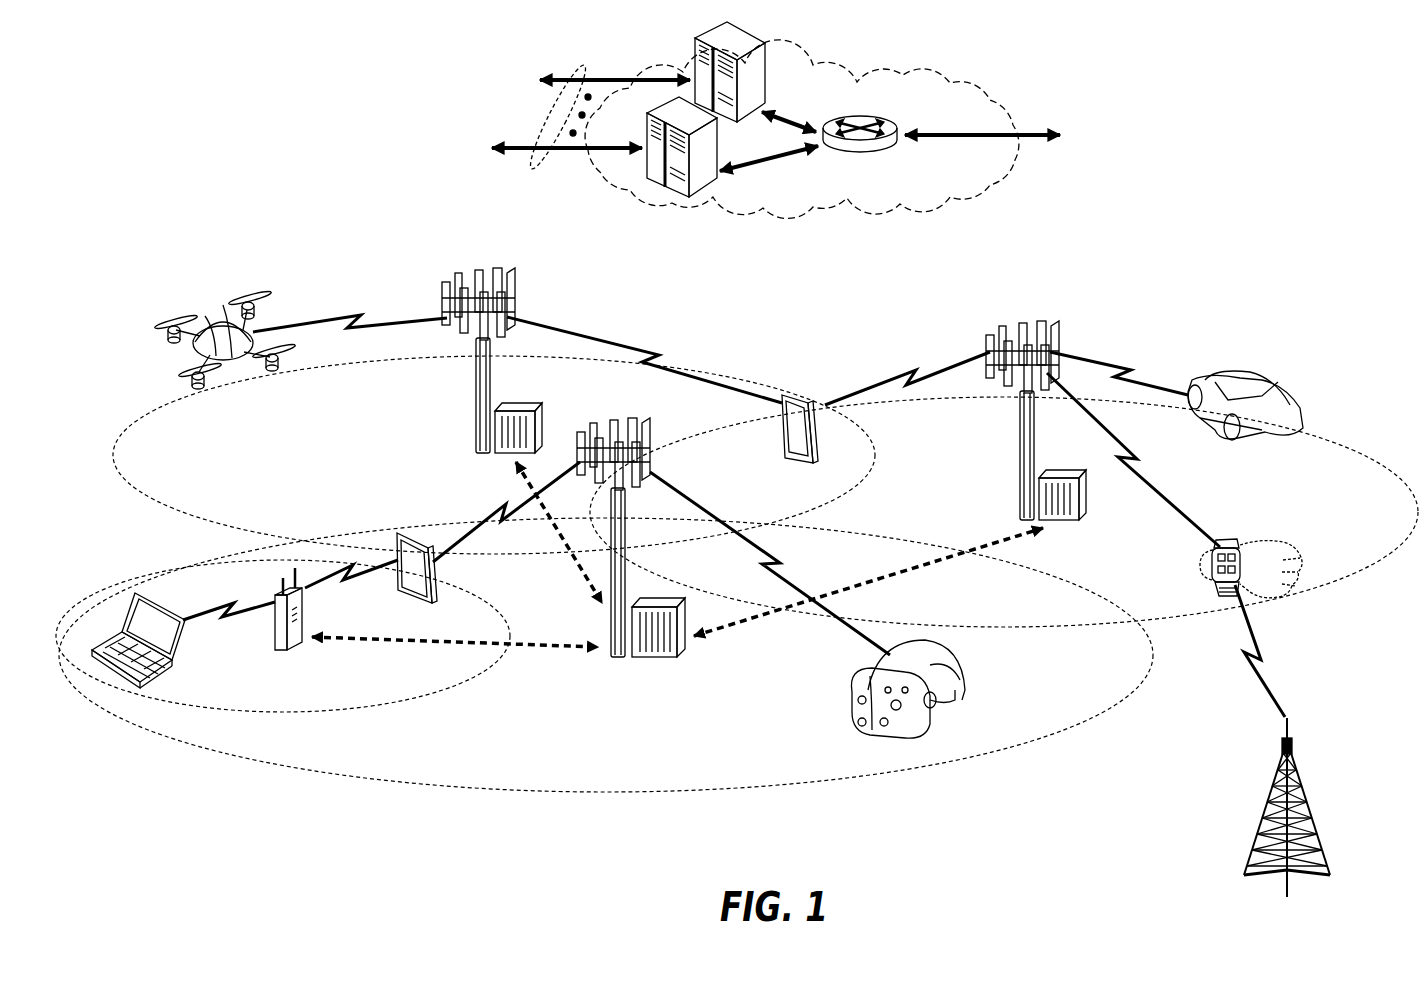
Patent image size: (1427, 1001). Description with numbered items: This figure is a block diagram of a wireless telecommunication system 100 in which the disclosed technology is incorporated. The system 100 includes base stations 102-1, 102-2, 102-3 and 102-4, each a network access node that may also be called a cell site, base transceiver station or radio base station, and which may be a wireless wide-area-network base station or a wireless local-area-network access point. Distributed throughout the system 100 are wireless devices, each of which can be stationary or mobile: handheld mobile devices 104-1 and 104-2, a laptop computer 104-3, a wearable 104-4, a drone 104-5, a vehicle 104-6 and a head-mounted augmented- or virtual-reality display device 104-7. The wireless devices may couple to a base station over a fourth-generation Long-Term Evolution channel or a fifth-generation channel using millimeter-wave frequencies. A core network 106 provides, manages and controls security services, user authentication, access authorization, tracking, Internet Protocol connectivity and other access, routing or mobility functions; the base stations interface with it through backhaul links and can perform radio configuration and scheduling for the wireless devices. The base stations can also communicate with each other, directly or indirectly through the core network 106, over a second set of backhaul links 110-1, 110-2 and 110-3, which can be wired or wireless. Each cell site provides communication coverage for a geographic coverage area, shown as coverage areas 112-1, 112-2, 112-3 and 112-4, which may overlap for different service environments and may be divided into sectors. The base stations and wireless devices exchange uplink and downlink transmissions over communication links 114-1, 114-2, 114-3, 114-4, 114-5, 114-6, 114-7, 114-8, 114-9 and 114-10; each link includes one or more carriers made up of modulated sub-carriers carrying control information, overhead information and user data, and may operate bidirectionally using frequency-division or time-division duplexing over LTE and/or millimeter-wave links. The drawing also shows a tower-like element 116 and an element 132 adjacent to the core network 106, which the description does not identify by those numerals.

The wireless telecommunication system 100 is at (1322, 126).
The base station 102-1 is at (618, 658).
The base station 102-2 is at (473, 400).
The base station 102-3 is at (1017, 437).
The base station 102-4 is at (273, 648).
The handheld mobile device 104-1 is at (433, 582).
The handheld mobile device 104-2 is at (780, 430).
The laptop computer 104-3 is at (115, 688).
The wearable 104-4 is at (1223, 543).
The drone 104-5 is at (233, 367).
The vehicle 104-6 is at (1270, 390).
The head-mounted display device 104-7 is at (968, 670).
The core network 106 is at (890, 202).
The backhaul link 110-1 is at (343, 643).
The backhaul link 110-2 is at (937, 563).
The backhaul link 110-3 is at (577, 560).
The geographic coverage area 112-1 is at (540, 795).
The geographic coverage area 112-2 is at (413, 700).
The geographic coverage area 112-3 is at (180, 512).
The geographic coverage area 112-4 is at (1333, 432).
The communication link 114-1 is at (785, 562).
The communication link 114-2 is at (500, 518).
The communication link 114-3 is at (202, 619).
The communication link 114-4 is at (343, 578).
The communication link 114-5 is at (357, 313).
The communication link 114-6 is at (653, 352).
The communication link 114-7 is at (905, 372).
The communication link 114-8 is at (1147, 478).
The communication link 114-9 is at (1118, 360).
The communication link 114-10 is at (1270, 651).
The network node / tower 116 is at (1300, 788).
The antenna / satellite link 132 is at (550, 160).